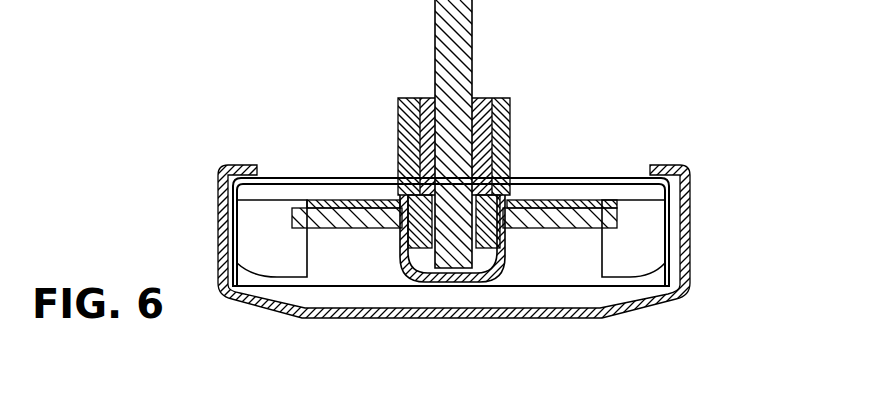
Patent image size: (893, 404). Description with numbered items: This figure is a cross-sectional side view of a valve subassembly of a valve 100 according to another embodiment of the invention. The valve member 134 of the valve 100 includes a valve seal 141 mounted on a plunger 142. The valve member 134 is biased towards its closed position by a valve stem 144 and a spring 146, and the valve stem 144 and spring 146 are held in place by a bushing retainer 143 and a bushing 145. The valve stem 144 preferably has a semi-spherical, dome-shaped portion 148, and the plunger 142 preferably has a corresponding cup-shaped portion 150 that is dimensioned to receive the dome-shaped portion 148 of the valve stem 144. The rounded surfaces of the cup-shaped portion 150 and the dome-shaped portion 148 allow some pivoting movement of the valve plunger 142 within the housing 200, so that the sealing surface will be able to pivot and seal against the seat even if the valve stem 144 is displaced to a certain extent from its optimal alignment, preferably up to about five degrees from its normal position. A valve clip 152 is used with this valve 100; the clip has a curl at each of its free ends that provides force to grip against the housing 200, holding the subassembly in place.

The valve 100 is at (662, 93).
The housing 200 is at (689, 233).
The valve clip 152 is at (290, 176).
The valve member 134 is at (283, 245).
The valve seal 141 is at (593, 209).
The plunger 142 is at (541, 205).
The bushing retainer 143 is at (407, 113).
The bushing 145 is at (503, 118).
The valve stem 144 is at (457, 25).
The spring 146 is at (400, 248).
The cup-shaped portion 150 is at (415, 272).
The dome-shaped portion 148 is at (450, 265).